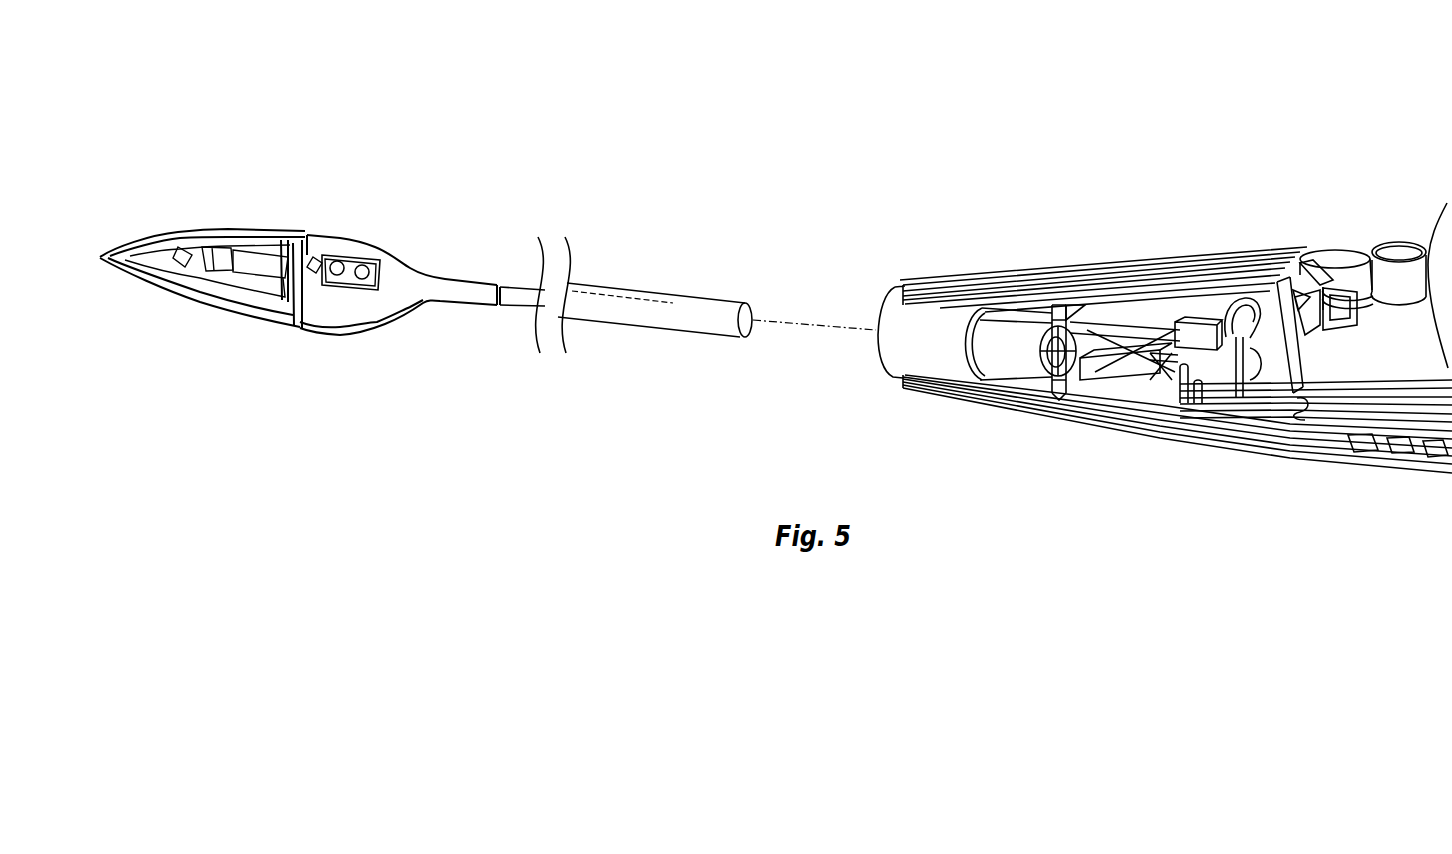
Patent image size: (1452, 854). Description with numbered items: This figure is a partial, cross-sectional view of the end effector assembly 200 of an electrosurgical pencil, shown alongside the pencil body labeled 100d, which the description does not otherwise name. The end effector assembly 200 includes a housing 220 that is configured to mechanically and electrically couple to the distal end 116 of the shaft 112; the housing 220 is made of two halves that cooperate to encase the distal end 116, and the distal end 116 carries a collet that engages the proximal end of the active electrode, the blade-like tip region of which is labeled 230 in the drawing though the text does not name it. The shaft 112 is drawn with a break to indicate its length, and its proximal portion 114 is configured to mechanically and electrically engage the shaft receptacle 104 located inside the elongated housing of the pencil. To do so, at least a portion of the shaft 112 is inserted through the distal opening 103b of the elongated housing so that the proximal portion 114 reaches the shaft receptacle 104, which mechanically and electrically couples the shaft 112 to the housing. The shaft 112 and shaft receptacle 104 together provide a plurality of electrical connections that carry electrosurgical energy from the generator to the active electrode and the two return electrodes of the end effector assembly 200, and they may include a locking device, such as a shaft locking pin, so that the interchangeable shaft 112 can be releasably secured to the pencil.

The end effector assembly 200 is at (150, 150).
The blade 230 is at (125, 279).
The housing 220 is at (407, 250).
The distal end of shaft 116 is at (508, 285).
The shaft 112 is at (658, 338).
The proximal portion of shaft 114 is at (708, 294).
The handpiece 100d is at (1075, 212).
The distal opening 103b is at (877, 367).
The shaft receptacle 104 is at (1135, 380).